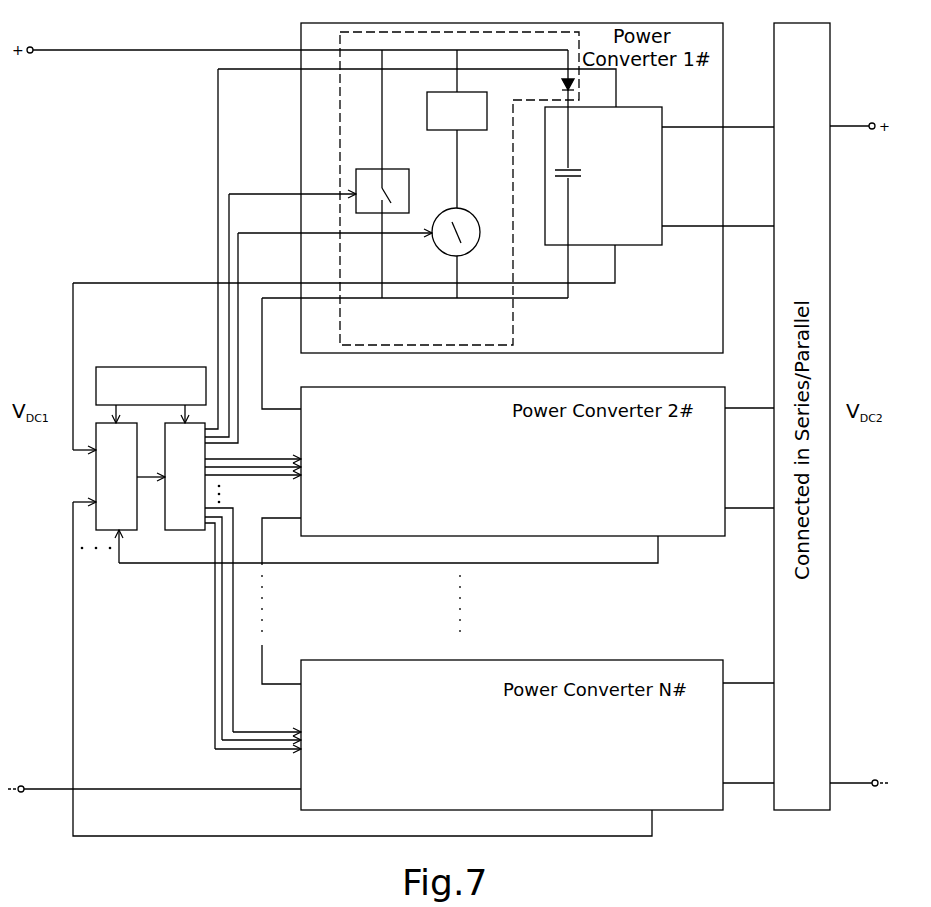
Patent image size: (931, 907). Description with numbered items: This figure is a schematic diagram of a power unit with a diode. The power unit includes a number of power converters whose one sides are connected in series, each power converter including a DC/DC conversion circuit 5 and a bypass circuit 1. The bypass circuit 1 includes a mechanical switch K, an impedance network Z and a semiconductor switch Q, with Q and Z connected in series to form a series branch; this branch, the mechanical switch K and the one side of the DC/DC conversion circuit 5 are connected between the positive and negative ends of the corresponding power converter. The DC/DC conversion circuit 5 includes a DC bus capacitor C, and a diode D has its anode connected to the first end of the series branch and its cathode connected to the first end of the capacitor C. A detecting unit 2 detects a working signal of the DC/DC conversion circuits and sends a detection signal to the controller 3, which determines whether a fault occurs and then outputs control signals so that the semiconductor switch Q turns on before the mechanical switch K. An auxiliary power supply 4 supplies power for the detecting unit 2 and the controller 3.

The bypass circuit 1 is at (421, 188).
The detecting unit 2 is at (116, 476).
The controller 3 is at (185, 476).
The auxiliary power supply 4 is at (151, 386).
The DC/DC conversion circuit 5 is at (606, 176).